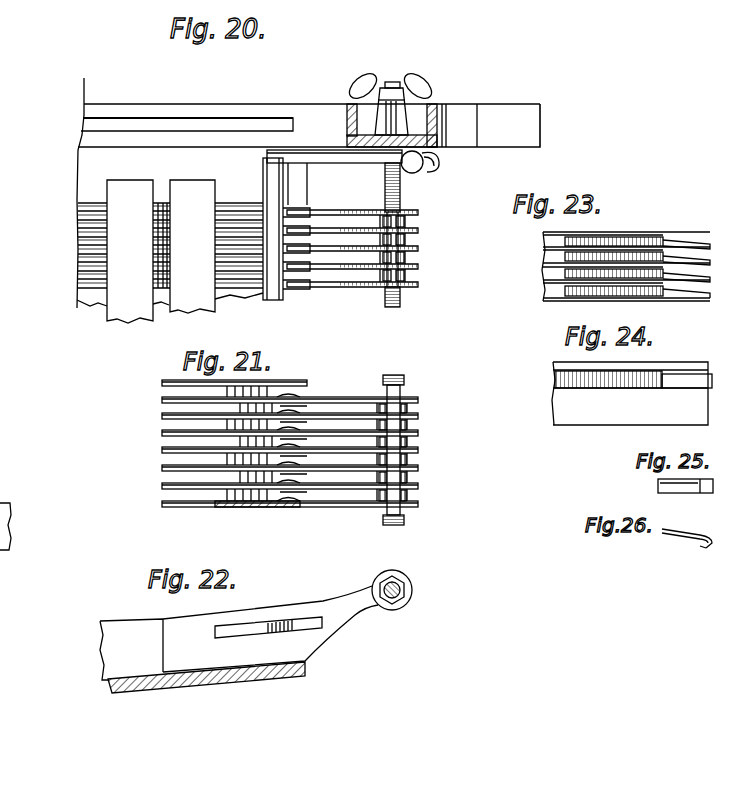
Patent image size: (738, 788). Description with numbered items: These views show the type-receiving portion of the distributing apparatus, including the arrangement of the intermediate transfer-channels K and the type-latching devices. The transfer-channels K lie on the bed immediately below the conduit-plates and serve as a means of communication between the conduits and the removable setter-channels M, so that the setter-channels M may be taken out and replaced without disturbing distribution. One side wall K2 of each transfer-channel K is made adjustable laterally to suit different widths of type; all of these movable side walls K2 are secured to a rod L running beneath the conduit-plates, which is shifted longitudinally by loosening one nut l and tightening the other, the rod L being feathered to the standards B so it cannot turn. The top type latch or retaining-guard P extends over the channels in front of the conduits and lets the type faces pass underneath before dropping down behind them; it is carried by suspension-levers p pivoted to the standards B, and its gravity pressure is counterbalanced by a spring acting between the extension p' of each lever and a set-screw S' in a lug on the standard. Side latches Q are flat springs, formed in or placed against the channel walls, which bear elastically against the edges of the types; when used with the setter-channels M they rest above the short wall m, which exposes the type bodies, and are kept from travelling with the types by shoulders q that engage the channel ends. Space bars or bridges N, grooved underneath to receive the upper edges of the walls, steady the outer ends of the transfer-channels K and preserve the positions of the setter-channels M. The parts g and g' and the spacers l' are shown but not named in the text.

In FIG. 20, the bar g is at (309, 122).
In FIG. 20, the slot in bar g' is at (187, 129).
In FIG. 20, the standard B is at (345, 129).
In FIG. 20, the nut l is at (390, 81).
In FIG. 22, the nut l is at (393, 609).
In FIG. 20, the rod L is at (394, 191).
In FIG. 21, the rod L is at (393, 458).
In FIG. 22, the rod L is at (408, 585).
In FIG. 20, the suspension-lever p is at (334, 161).
In FIG. 20, the set-screw S' is at (412, 162).
In FIG. 20, the extension of suspension-lever p' is at (449, 161).
In FIG. 20, the type latch or retaining-guard P is at (250, 192).
In FIG. 20, the transfer-channel K is at (250, 197).
In FIG. 21, the transfer-channel K is at (160, 410).
In FIG. 20, the adjustable side wall K2 is at (350, 238).
In FIG. 21, the adjustable side wall K2 is at (290, 444).
In FIG. 22, the adjustable side wall K2 is at (270, 629).
In FIG. 20, the setter-channel M is at (160, 269).
In FIG. 22, the setter-channel M is at (202, 656).
In FIG. 24, the setter-channel M is at (618, 393).
In FIG. 20, the space bar or bridge N is at (161, 251).
In FIG. 20, the spacers l' is at (410, 247).
In FIG. 21, the spacers l' is at (410, 452).
In FIG. 23, the short wall m is at (543, 270).
In FIG. 24, the short wall m is at (630, 393).
In FIG. 21, the side latch or spring type latch Q is at (257, 460).
In FIG. 22, the side latch or spring type latch Q is at (280, 626).
In FIG. 23, the side latch or spring type latch Q is at (694, 269).
In FIG. 24, the side latch or spring type latch Q is at (695, 383).
In FIG. 25, the side latch or spring type latch Q is at (686, 495).
In FIG. 26, the side latch or spring type latch Q is at (687, 543).
In FIG. 26, the shoulder q is at (707, 555).